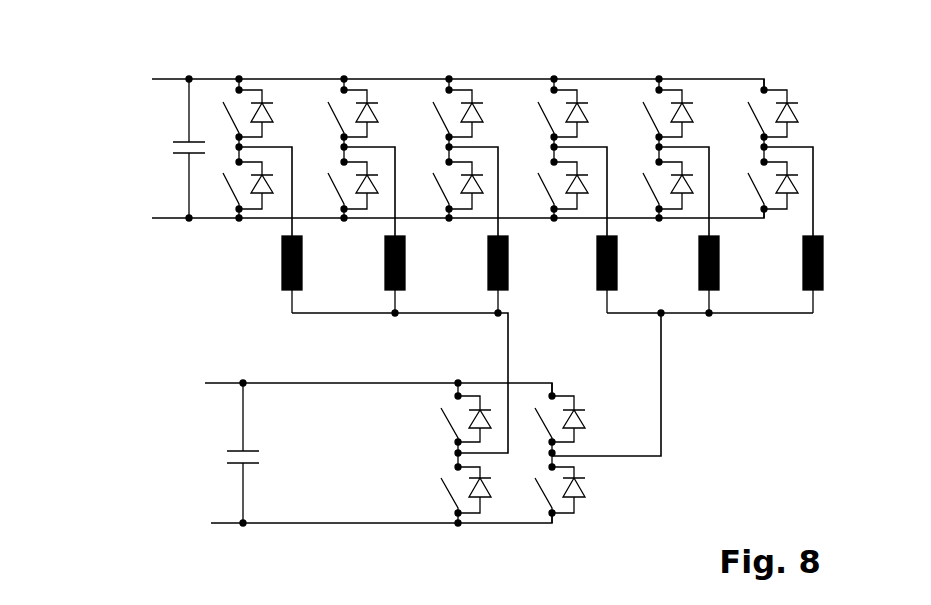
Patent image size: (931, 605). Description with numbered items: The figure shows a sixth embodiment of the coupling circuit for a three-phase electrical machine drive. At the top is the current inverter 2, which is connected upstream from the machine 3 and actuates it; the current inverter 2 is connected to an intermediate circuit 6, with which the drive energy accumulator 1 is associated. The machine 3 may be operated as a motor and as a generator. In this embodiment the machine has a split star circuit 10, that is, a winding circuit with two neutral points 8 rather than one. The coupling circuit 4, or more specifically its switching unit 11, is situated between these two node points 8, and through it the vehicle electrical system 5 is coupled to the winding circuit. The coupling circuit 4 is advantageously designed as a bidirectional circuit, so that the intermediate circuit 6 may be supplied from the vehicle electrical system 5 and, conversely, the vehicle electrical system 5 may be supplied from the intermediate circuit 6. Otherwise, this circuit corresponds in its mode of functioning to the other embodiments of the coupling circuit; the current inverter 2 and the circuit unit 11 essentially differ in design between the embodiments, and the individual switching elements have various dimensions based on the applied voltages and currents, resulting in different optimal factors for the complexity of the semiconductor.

The drive energy accumulator 1 is at (110, 192).
The current inverter 2 is at (584, 57).
The three-phase machine 3 is at (843, 289).
The coupling circuit 4 is at (320, 433).
The vehicle electrical system 5 is at (118, 465).
The intermediate circuit 6 is at (148, 120).
The neutral point 8 is at (566, 383).
The star circuit 10 is at (780, 313).
The circuit unit 11 is at (528, 543).